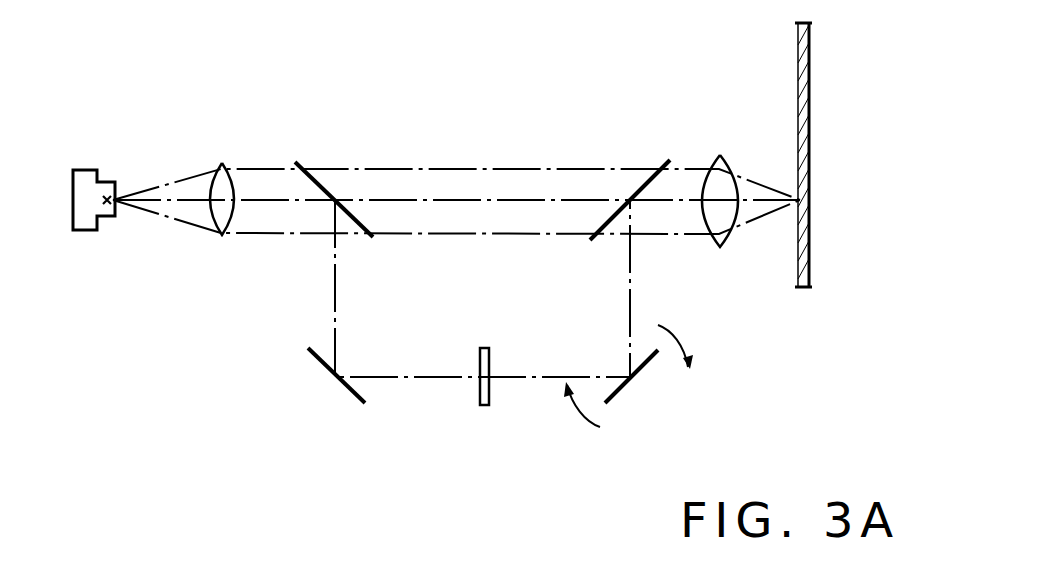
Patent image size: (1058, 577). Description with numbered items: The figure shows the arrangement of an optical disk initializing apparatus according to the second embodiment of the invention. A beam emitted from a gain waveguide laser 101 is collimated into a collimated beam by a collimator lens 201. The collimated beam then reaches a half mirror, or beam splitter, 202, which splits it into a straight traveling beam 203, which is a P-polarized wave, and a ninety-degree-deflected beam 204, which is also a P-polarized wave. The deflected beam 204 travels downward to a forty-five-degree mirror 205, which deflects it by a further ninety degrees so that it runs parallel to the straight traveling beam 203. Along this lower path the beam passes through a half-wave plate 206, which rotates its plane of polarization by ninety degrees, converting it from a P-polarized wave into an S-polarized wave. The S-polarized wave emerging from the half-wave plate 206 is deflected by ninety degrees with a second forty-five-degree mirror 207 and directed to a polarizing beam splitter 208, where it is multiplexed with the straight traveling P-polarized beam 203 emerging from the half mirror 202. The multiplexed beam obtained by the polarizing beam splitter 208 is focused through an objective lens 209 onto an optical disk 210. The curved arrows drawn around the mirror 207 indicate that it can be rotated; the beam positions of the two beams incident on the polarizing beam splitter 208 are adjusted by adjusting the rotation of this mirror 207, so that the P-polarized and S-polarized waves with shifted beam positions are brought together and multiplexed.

The gain waveguide laser 101 is at (85, 172).
The collimator lens 201 is at (222, 163).
The half mirror (beam splitter) 202 is at (319, 180).
The straight traveling beam 203 is at (470, 168).
The 90°-deflected beam 204 is at (298, 295).
The 45° mirror 205 is at (337, 380).
The λ/2 plate 206 is at (485, 407).
The 45° mirror 207 is at (641, 373).
The polarizing beam splitter 208 is at (658, 171).
The objective lens 209 is at (717, 246).
The optical disk 210 is at (799, 56).